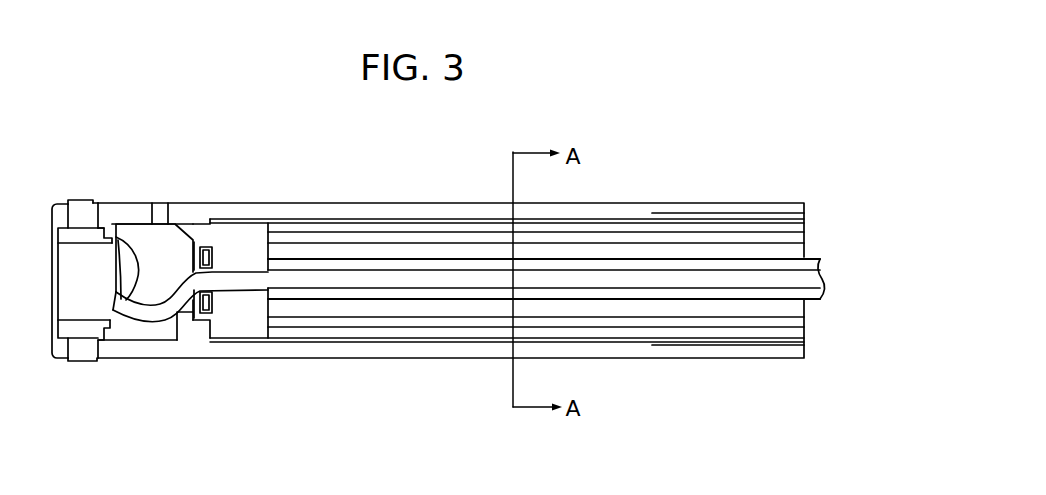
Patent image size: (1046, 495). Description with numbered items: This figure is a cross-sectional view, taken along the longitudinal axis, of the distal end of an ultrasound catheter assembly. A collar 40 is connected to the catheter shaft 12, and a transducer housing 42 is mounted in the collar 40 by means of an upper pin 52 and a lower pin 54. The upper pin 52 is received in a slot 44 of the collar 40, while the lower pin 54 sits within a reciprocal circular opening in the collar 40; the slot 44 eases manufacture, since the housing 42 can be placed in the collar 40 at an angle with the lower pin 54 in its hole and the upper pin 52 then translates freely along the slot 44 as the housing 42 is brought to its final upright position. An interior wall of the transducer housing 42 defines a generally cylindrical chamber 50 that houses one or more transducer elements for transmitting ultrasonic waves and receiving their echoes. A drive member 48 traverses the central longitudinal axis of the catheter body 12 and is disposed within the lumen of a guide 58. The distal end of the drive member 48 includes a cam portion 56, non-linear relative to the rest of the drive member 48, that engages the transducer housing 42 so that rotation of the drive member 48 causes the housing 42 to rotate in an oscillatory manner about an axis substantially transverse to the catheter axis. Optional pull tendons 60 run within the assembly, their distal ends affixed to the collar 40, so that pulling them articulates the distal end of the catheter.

The catheter shaft 12 is at (428, 202).
The collar 40 is at (178, 203).
The transducer housing 42 is at (128, 203).
The slot 44 is at (112, 196).
The drive member 48 is at (610, 262).
The chamber 50 is at (76, 282).
The upper pin 52 is at (82, 200).
The lower pin 54 is at (82, 362).
The cam portion 56 is at (188, 314).
The guide 58 is at (740, 293).
The pull tendons 60 is at (287, 232).